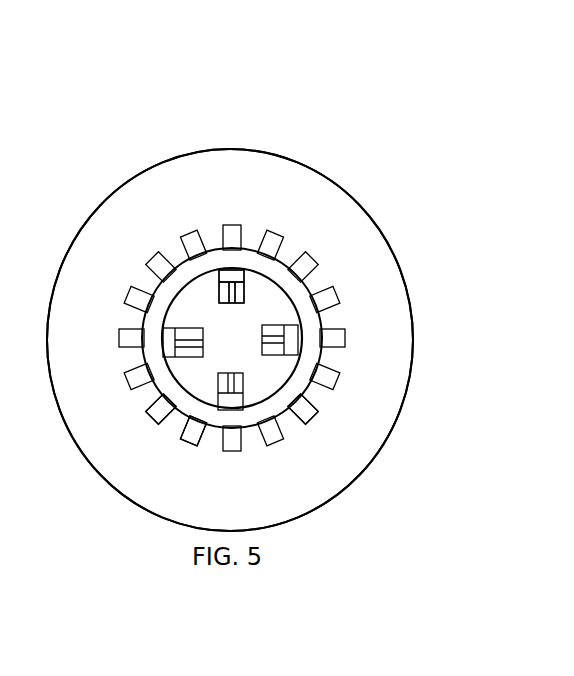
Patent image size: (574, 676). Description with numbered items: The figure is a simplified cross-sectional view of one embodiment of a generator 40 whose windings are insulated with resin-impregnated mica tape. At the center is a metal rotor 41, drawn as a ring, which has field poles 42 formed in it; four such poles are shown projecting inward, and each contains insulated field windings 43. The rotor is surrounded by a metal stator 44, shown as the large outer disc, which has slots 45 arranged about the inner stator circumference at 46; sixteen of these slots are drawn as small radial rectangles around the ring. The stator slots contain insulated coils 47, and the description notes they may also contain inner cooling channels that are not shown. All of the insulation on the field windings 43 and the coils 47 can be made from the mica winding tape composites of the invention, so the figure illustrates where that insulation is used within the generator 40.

The generator 40 is at (435, 445).
The metal rotor 41 is at (283, 312).
The field poles 42 is at (244, 280).
The insulated field windings 43 is at (219, 292).
The metal stator 44 is at (405, 307).
The slots 45 is at (272, 447).
The inner stator circumference 46 is at (292, 420).
The insulated coils 47 is at (195, 437).